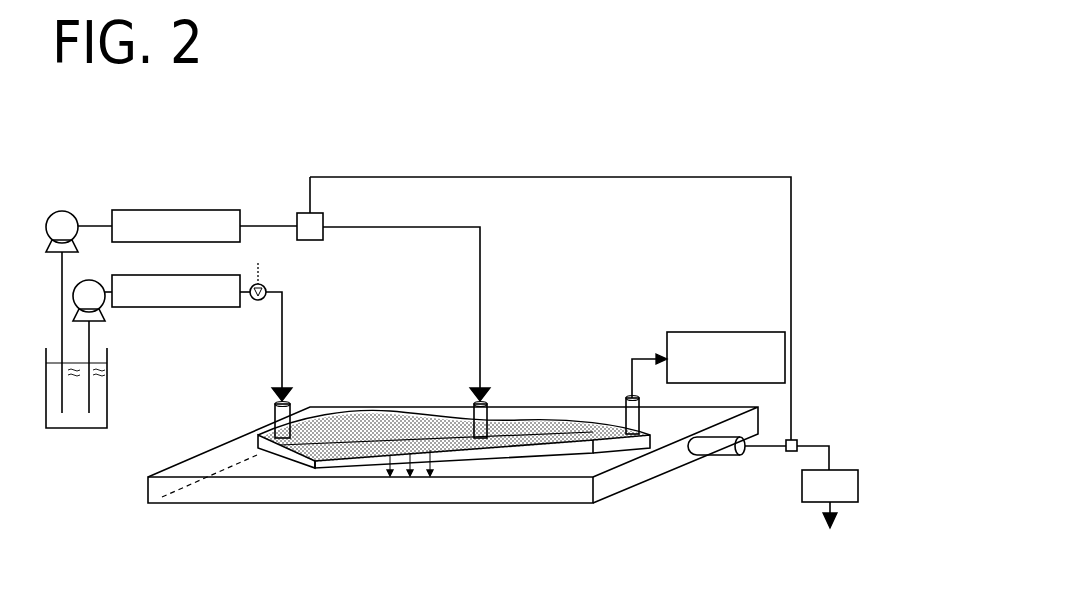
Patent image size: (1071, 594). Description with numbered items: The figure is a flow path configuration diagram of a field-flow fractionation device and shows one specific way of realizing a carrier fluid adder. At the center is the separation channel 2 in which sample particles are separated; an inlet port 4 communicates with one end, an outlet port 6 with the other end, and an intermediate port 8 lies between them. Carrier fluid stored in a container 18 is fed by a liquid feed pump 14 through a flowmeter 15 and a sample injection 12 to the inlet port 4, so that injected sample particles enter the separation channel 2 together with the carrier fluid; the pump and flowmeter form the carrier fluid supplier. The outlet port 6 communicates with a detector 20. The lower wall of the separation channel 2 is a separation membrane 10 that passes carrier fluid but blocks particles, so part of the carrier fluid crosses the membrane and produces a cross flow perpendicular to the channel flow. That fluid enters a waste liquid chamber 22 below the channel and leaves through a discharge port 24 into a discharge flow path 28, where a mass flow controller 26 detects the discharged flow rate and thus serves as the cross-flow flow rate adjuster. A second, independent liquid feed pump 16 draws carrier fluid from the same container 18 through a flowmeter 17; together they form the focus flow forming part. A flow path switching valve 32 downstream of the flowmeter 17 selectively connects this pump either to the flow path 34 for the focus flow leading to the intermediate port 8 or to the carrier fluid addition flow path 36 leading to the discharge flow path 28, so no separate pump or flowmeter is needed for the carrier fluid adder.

The separation channel 2 is at (543, 420).
The inlet port 4 is at (287, 410).
The outlet port 6 is at (630, 410).
The intermediate port 8 is at (481, 422).
The separation membrane 10 is at (360, 423).
The sample injection 12 is at (265, 286).
The liquid feed pump 14 is at (105, 308).
The flowmeter 15 is at (200, 308).
The liquid feed pump 16 is at (73, 212).
The flowmeter 17 is at (220, 210).
The container 18 is at (110, 380).
The detector 20 is at (730, 330).
The waste liquid chamber 22 is at (277, 470).
The discharge port 24 is at (718, 447).
The mass flow controller 26 is at (847, 470).
The discharge flow path 28 is at (818, 443).
The flow path switching valve 32 is at (322, 240).
The flow path for the focus flow 34 is at (482, 270).
The carrier fluid addition flow path 36 is at (662, 175).